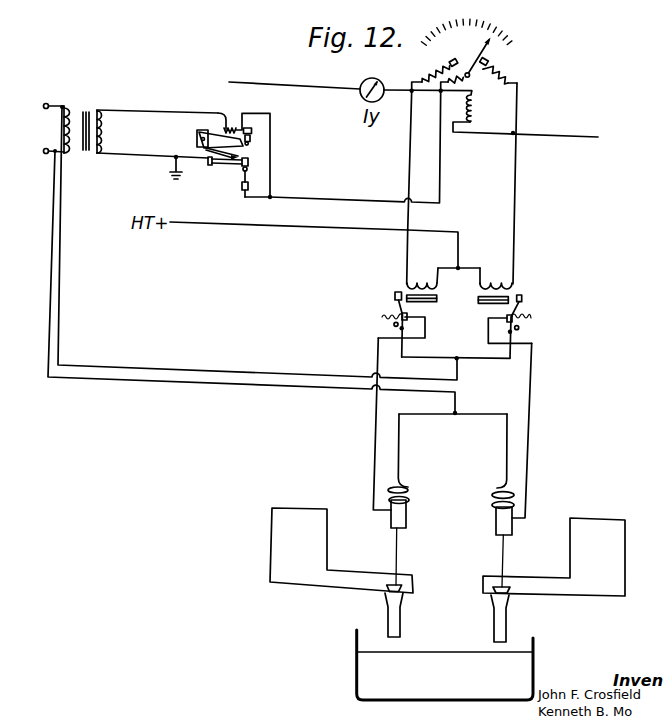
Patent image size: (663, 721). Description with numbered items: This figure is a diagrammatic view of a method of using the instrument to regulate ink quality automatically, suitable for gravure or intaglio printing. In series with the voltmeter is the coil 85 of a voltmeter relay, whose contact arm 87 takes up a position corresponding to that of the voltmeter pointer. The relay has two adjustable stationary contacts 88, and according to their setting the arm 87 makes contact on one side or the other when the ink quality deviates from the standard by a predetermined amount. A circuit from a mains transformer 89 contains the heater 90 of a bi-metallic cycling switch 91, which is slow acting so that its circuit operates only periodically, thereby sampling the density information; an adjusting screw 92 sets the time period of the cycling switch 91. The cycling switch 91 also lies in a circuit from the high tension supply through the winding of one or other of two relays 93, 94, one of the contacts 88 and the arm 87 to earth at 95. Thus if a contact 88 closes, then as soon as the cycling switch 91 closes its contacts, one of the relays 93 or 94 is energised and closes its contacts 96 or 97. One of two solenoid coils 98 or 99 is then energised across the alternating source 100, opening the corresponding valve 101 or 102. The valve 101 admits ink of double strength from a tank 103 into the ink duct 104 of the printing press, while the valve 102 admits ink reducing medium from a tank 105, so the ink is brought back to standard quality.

The coil of voltmeter relay 85 is at (473, 104).
The contact arm 87 is at (477, 60).
The adjustable stationary contacts 88 is at (450, 60).
The mains transformer 89 is at (87, 108).
The heater 90 is at (223, 128).
The bi-metallic cycling switch 91 is at (236, 167).
The adjusting screw 92 is at (252, 131).
The relay 93 is at (422, 266).
The relay 94 is at (495, 278).
The earth 95 is at (168, 167).
The relay contacts 96 is at (398, 311).
The relay contacts 97 is at (518, 309).
The solenoid coil 98 is at (410, 497).
The solenoid coil 99 is at (492, 497).
The alternating source 100 is at (60, 110).
The valve 101 is at (404, 591).
The valve 102 is at (492, 592).
The tank 103 is at (270, 530).
The ink duct 104 is at (356, 670).
The tank 105 is at (596, 519).